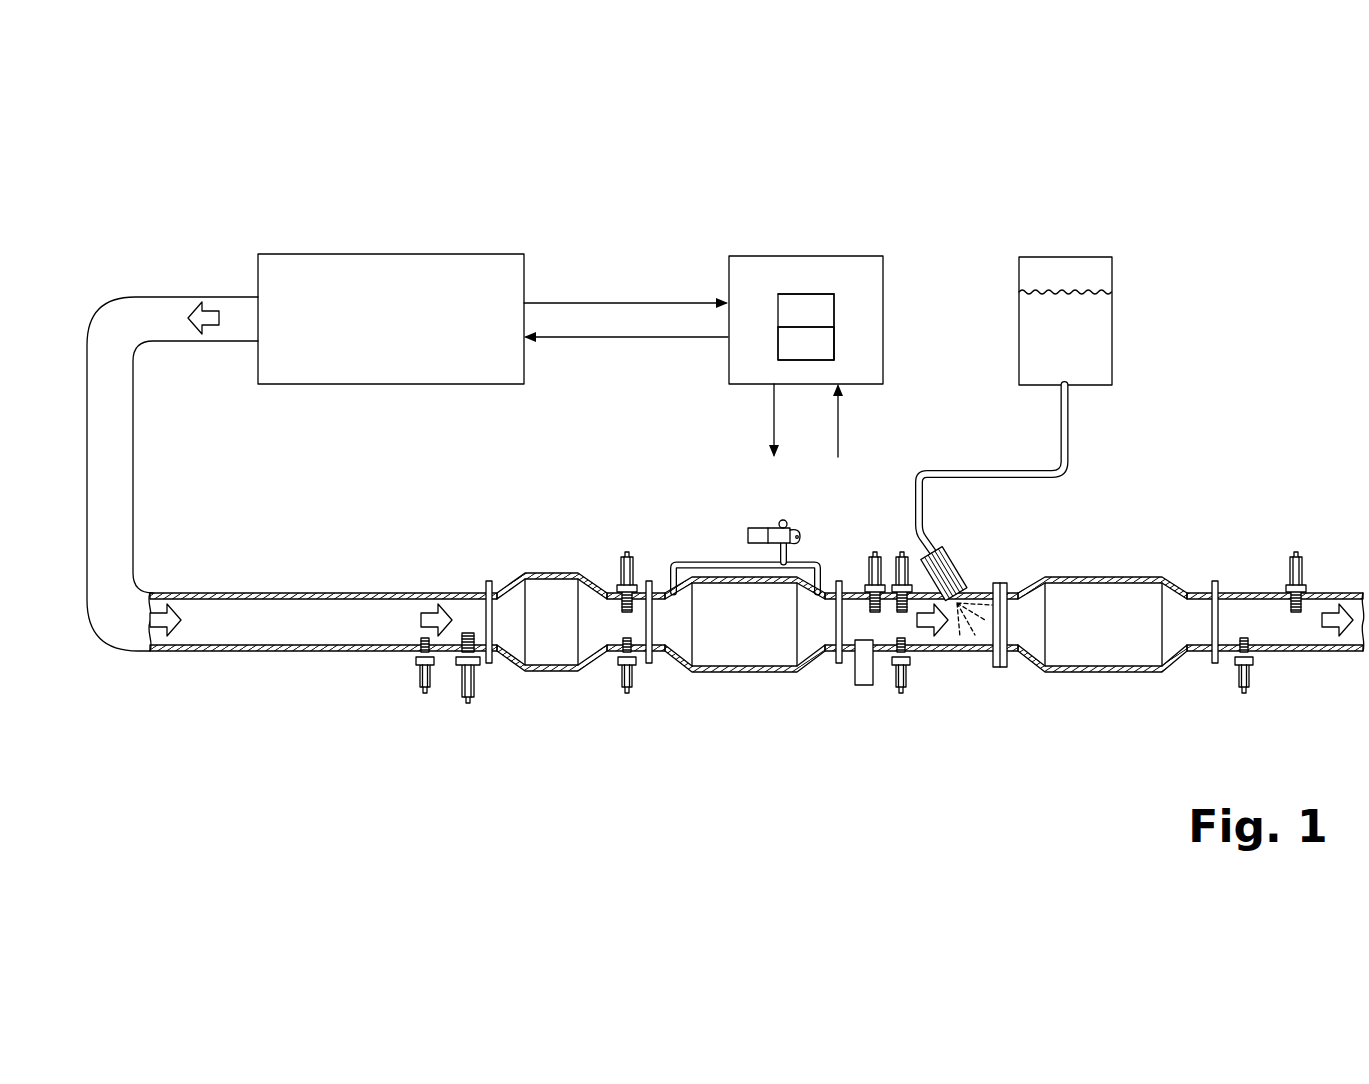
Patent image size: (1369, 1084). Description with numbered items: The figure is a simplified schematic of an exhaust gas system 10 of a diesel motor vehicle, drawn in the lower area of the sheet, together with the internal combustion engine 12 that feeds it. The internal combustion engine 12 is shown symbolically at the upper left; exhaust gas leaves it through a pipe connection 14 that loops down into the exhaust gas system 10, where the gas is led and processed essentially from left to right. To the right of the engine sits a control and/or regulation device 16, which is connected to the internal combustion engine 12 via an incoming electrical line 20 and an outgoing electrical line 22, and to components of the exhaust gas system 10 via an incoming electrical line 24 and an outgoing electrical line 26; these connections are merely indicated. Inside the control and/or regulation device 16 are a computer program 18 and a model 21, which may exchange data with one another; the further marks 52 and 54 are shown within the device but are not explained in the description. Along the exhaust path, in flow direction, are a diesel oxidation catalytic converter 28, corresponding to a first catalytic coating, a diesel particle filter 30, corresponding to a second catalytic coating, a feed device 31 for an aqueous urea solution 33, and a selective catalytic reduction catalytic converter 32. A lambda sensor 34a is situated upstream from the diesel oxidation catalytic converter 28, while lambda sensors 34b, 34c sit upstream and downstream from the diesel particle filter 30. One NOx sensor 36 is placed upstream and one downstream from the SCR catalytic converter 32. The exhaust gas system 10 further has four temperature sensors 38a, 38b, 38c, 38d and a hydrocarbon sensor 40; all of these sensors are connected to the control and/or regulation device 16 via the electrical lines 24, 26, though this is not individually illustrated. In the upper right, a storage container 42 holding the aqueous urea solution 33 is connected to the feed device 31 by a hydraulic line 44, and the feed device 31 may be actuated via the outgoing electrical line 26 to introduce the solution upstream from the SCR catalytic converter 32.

The exhaust gas system 10 is at (660, 790).
The internal combustion engine 12 is at (388, 291).
The pipe connection 14 is at (122, 470).
The control and/or regulation device 16 is at (777, 276).
The computer program 18 is at (814, 305).
The incoming electrical line 20 is at (627, 300).
The model 21 is at (806, 358).
The outgoing electrical line 22 is at (627, 341).
The incoming electrical line 24 is at (845, 428).
The outgoing electrical line 26 is at (772, 428).
The diesel oxidation catalytic converter 28 is at (554, 640).
The diesel particle filter 30 is at (741, 643).
The feed device 31 is at (958, 573).
The selective catalytic reduction (SCR) catalytic converter 32 is at (1104, 645).
The aqueous urea solution 33 is at (1100, 340).
The lambda sensor 34a is at (462, 681).
The lambda sensor 34b is at (620, 572).
The lambda sensor 34c is at (898, 566).
The nitrogen oxides (NOx) sensor 36 is at (870, 576).
The temperature sensor 38a is at (420, 678).
The temperature sensor 38b is at (625, 680).
The temperature sensor 38c is at (898, 678).
The temperature sensor 38d is at (1240, 680).
The hydrocarbon (HC) sensor 40 is at (851, 673).
The storage container 42 is at (1100, 272).
The hydraulic line 44 is at (1068, 432).
The software module 52 is at (841, 282).
The diagnostic module 54 is at (862, 294).